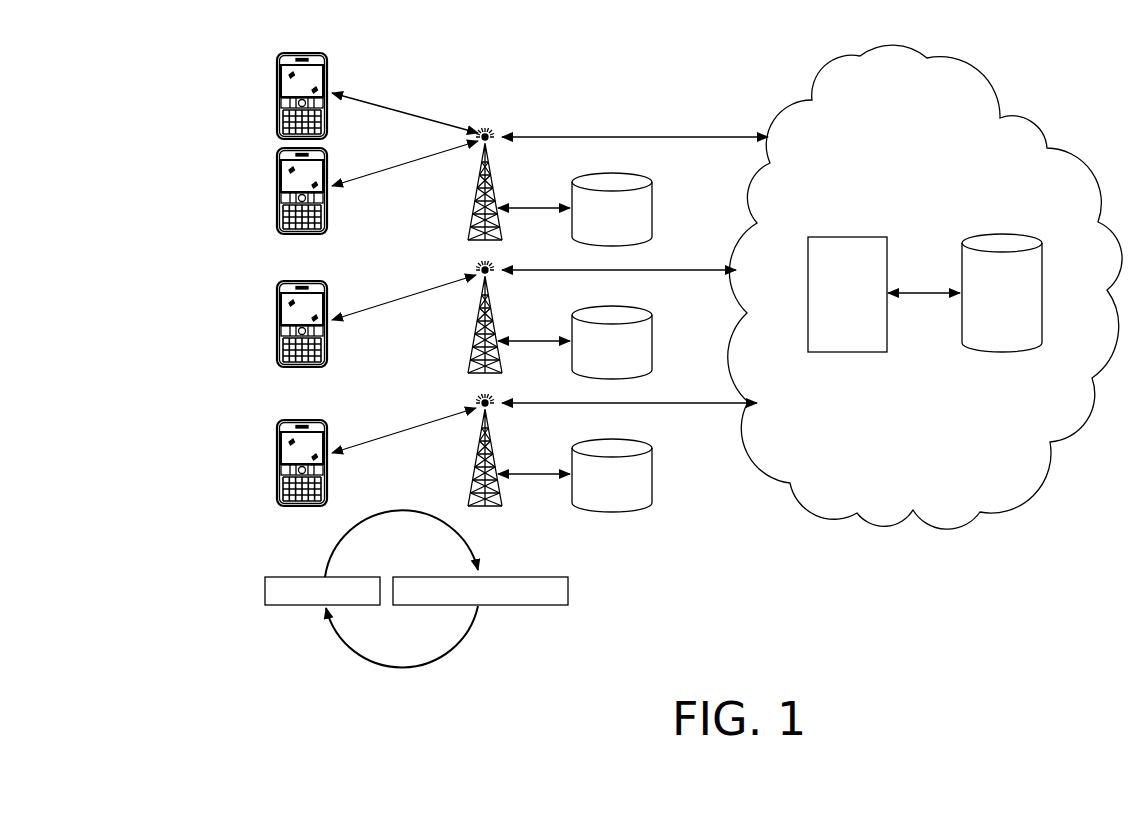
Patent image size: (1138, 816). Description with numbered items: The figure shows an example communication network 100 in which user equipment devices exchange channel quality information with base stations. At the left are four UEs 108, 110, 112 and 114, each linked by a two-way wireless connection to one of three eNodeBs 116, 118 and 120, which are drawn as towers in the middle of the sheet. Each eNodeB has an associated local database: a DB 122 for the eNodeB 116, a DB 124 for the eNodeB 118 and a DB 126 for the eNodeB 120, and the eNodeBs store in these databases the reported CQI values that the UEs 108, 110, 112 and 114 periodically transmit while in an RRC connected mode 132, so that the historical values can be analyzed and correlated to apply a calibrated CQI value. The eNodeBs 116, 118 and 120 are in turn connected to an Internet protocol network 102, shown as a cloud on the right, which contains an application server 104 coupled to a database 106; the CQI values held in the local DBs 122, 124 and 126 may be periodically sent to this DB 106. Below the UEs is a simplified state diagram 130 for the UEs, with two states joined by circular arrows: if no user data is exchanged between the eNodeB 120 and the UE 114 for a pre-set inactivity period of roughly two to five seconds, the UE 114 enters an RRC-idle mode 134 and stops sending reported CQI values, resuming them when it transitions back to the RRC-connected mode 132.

The communication network 100 is at (578, 42).
The Internet protocol (IP) network 102 is at (936, 186).
The application server 104 is at (846, 353).
The database 106 is at (1000, 351).
The UE 108 is at (275, 100).
The UE 110 is at (275, 195).
The UE 112 is at (275, 325).
The UE 114 is at (275, 460).
The eNodeB 116 is at (491, 173).
The eNodeB 118 is at (491, 306).
The eNodeB 120 is at (491, 439).
The local database 122 is at (653, 207).
The local database 124 is at (653, 340).
The local database 126 is at (653, 473).
The state diagram 130 is at (464, 588).
The RRC-connected mode 132 is at (520, 606).
The RRC-idle mode 134 is at (285, 577).